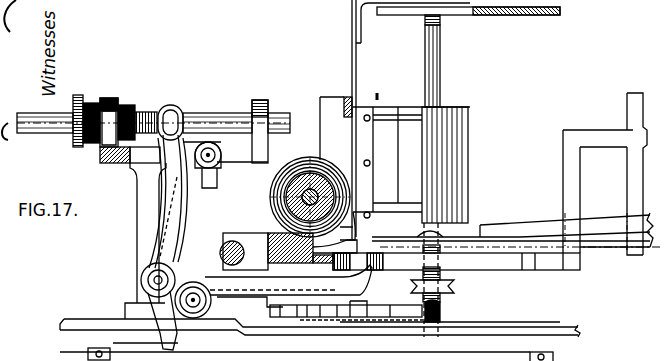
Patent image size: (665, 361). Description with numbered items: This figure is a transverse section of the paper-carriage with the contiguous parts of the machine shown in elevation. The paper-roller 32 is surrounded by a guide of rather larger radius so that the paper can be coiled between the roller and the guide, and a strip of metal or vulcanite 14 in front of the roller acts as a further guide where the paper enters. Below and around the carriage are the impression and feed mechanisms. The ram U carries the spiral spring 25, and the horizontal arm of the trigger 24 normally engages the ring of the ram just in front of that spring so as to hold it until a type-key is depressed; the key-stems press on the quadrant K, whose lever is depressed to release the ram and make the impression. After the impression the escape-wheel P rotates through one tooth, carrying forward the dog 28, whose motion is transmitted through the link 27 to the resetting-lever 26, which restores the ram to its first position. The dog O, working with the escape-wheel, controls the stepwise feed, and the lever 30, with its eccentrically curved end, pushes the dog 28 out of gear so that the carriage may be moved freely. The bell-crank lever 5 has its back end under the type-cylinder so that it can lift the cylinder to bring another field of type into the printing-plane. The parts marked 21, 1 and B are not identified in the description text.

The ram U is at (224, 110).
The spiral spring 25 is at (147, 112).
The resetting-lever 26 is at (180, 346).
The trigger 24 is at (207, 190).
The bracket bar 21 is at (271, 131).
The paper-roller 32 is at (271, 206).
The strip of metal or vulcanite 14 is at (345, 199).
The frame member 1 is at (376, 101).
The top plate B is at (468, 21).
The bell-crank lever 5 is at (516, 230).
The quadrant K is at (456, 270).
The dog O is at (615, 255).
The lever 30 is at (273, 291).
The escape-wheel P is at (298, 312).
The link 27 is at (320, 328).
The dog 28 is at (391, 324).